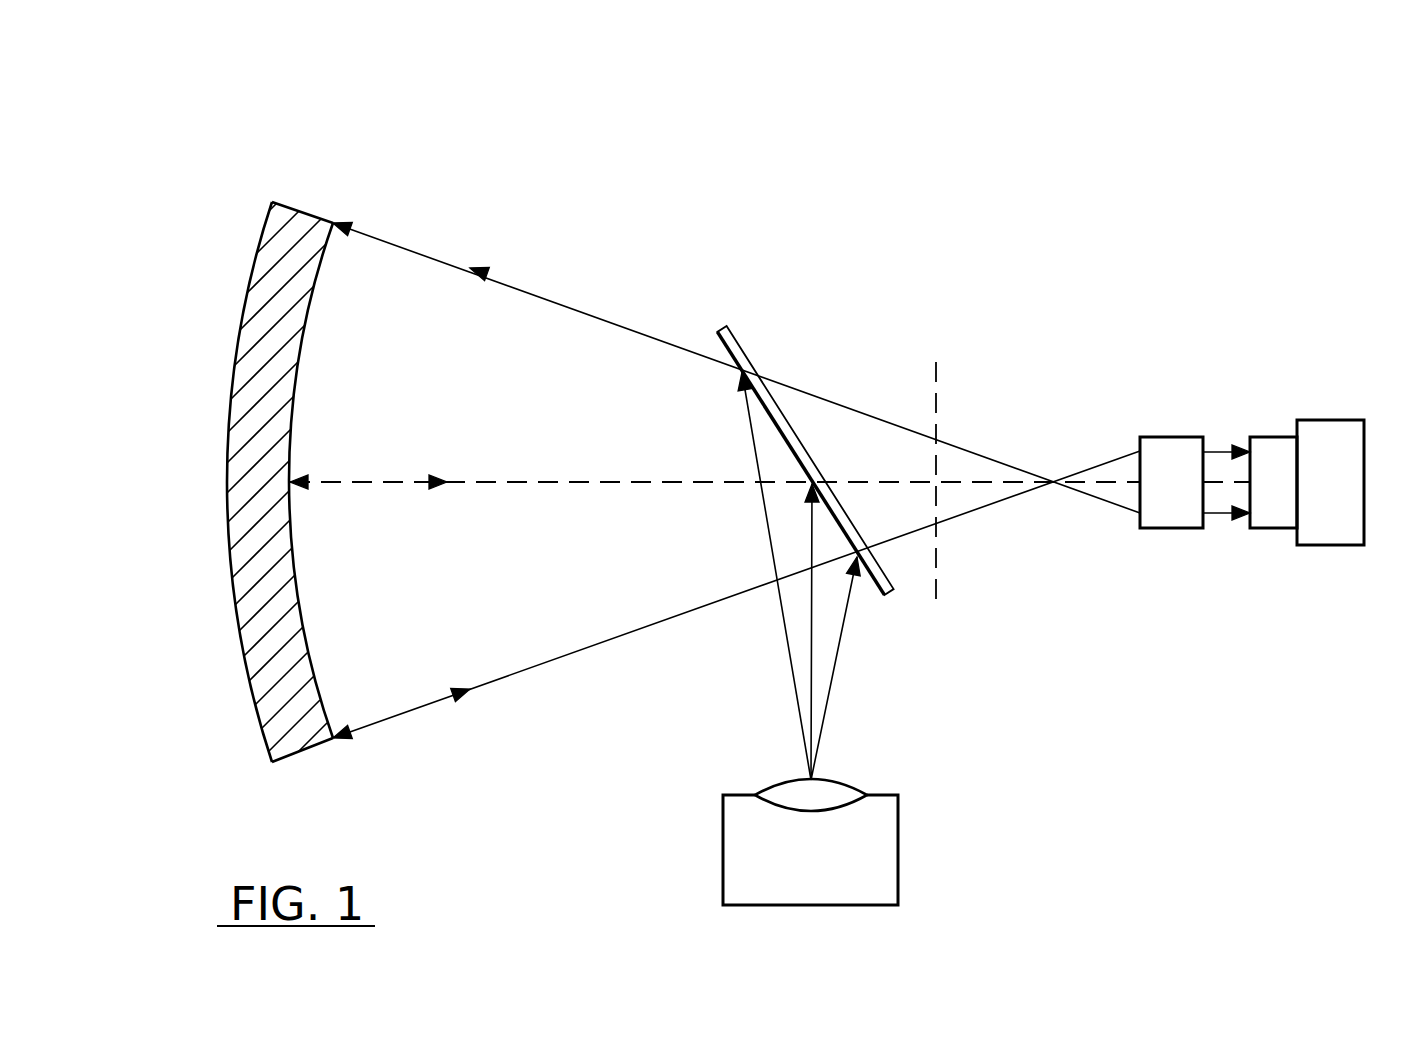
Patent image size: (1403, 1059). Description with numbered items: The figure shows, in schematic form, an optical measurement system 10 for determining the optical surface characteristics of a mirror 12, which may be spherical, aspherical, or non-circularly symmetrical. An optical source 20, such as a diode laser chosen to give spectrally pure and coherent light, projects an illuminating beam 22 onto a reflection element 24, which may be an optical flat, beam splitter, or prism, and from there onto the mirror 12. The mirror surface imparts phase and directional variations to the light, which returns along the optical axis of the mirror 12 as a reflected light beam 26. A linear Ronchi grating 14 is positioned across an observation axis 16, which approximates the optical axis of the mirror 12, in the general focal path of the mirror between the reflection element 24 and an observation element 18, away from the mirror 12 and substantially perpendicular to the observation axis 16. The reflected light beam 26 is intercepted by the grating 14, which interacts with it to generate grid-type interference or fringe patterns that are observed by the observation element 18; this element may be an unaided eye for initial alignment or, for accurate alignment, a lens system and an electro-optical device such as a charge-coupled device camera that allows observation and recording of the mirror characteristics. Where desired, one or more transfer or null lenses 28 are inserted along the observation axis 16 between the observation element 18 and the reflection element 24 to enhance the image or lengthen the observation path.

The optical measurement system 10 is at (747, 243).
The mirror 12 is at (228, 470).
The linear Ronchi grating 14 is at (936, 392).
The observation axis 16 is at (937, 482).
The observation element 18 is at (1315, 498).
The optical source 20 is at (793, 882).
The illuminating beam 22 is at (336, 224).
The reflection element 24 is at (895, 588).
The reflected light beam 26 is at (474, 268).
The null lens 28 is at (1188, 498).